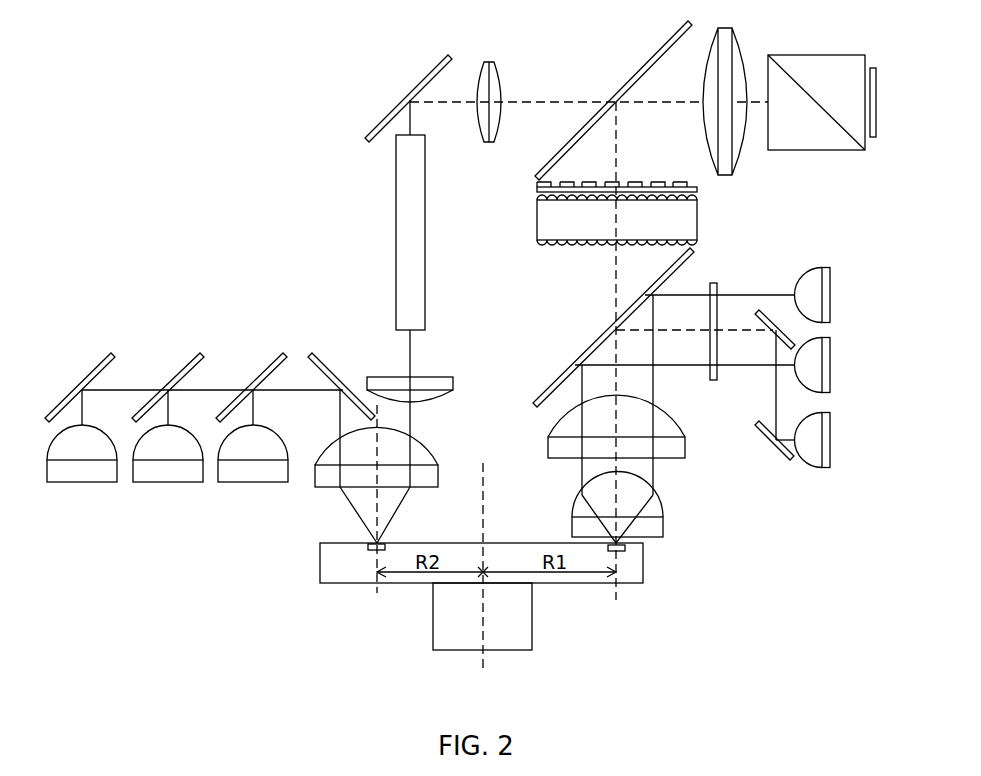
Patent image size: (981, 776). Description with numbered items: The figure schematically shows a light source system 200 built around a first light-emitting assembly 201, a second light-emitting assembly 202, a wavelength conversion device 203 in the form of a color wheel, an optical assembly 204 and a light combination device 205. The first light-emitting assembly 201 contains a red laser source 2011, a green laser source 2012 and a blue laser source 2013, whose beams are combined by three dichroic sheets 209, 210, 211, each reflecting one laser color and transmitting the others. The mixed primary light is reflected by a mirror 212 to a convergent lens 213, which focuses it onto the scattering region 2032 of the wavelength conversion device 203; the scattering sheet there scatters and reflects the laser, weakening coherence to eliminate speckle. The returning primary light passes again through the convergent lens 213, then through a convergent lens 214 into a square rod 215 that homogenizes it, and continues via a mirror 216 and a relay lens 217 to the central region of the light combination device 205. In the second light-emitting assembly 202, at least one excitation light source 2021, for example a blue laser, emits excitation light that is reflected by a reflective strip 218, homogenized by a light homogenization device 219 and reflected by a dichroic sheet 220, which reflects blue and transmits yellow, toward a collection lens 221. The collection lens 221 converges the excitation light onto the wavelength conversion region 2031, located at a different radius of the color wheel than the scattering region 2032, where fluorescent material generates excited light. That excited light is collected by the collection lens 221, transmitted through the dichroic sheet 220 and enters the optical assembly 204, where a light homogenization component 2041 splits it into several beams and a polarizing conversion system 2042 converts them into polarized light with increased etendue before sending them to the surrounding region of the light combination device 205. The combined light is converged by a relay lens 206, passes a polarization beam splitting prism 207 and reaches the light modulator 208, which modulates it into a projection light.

The light source system 200 is at (147, 93).
The first light-emitting assembly 201 is at (73, 535).
The red laser source 2011 is at (95, 483).
The green laser source 2012 is at (188, 483).
The blue laser source 2013 is at (248, 483).
The dichroic sheet 209 is at (97, 364).
The dichroic sheet 210 is at (187, 364).
The dichroic sheet 211 is at (270, 364).
The mirror 212 is at (324, 359).
The convergent lens 213 is at (332, 490).
The convergent lens 214 is at (435, 400).
The square rod 215 is at (396, 198).
The mirror 216 is at (397, 102).
The relay lens 217 is at (490, 62).
The light combination device 205 is at (647, 63).
The relay lens 206 is at (733, 143).
The polarization beam splitting prism 207 is at (805, 152).
The light modulator 208 is at (877, 138).
The optical assembly 204 is at (490, 257).
The light homogenization component 2041 is at (537, 212).
The polarizing conversion system 2042 is at (697, 188).
The dichroic sheet 220 is at (605, 330).
The light homogenization device 219 is at (718, 372).
The reflective strip 218 is at (782, 320).
The collection lens 221 is at (683, 440).
The second light-emitting assembly 202 is at (880, 492).
The excitation light source 2021 is at (835, 280).
The wavelength conversion device 203 is at (447, 615).
The wavelength conversion region 2031 is at (620, 552).
The scattering region 2032 is at (372, 552).